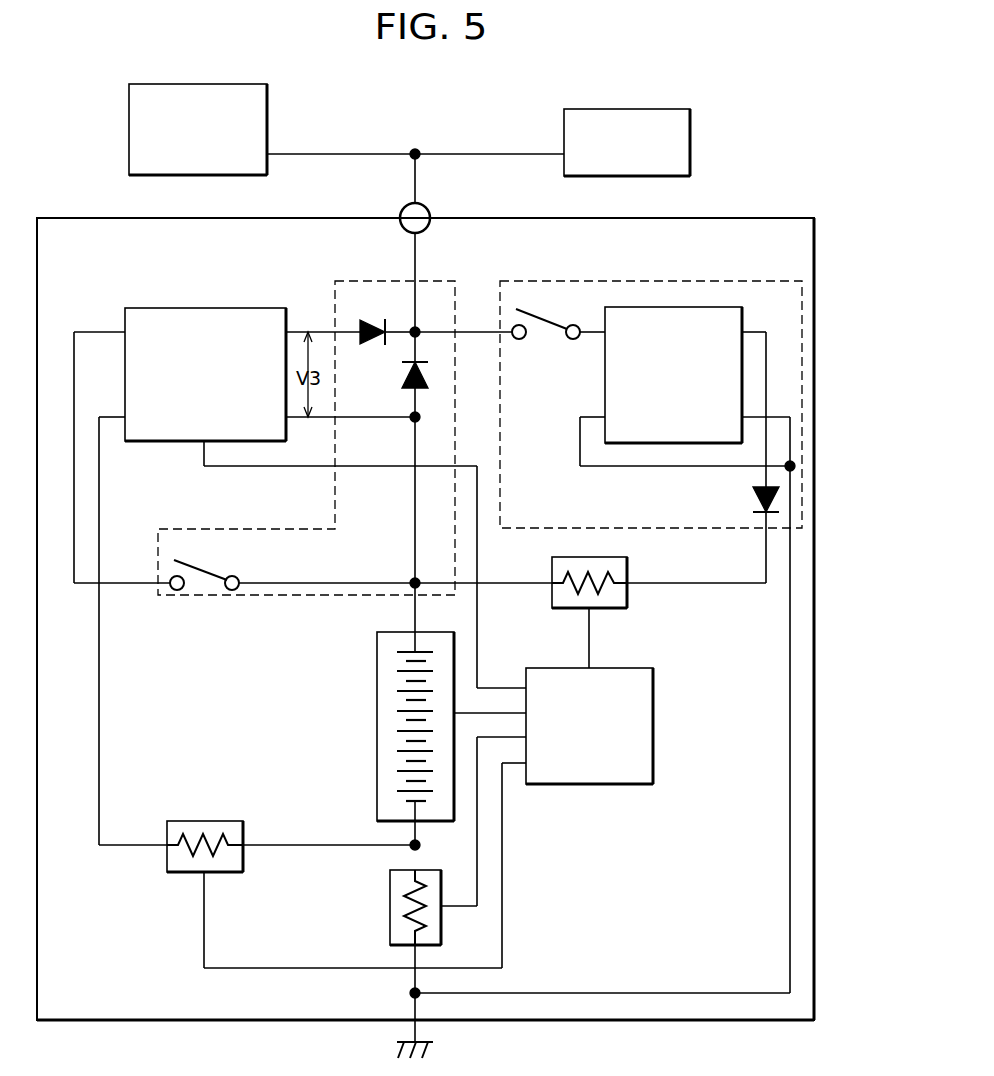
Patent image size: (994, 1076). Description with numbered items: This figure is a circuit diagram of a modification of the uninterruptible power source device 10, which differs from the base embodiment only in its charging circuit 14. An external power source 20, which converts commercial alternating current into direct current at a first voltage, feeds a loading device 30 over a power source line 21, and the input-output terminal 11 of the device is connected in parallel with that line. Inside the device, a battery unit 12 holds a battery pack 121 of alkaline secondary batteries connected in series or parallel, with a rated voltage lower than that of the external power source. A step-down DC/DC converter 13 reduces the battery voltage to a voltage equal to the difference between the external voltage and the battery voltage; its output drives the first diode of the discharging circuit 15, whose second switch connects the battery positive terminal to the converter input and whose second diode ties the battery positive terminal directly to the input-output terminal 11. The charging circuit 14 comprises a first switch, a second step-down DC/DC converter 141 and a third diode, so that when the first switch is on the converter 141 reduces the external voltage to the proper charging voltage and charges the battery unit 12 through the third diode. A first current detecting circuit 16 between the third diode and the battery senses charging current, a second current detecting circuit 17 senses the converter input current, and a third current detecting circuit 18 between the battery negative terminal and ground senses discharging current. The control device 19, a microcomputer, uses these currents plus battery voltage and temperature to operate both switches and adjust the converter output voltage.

The uninterruptible power source device 10 is at (87, 218).
The input-output terminal 11 is at (402, 211).
The battery unit 12 is at (377, 727).
The battery pack 121 is at (400, 748).
The DC/DC converter 13 is at (158, 308).
The charging circuit 14 is at (608, 611).
The DC/DC converter 141 is at (700, 307).
The discharging circuit 15 is at (365, 281).
The first current detecting circuit 16 is at (628, 565).
The second current detecting circuit 17 is at (186, 821).
The third current detecting circuit 18 is at (390, 890).
The control device 19 is at (620, 668).
The external power source 20 is at (157, 84).
The power source line 21 is at (365, 154).
The loading device 30 is at (590, 109).